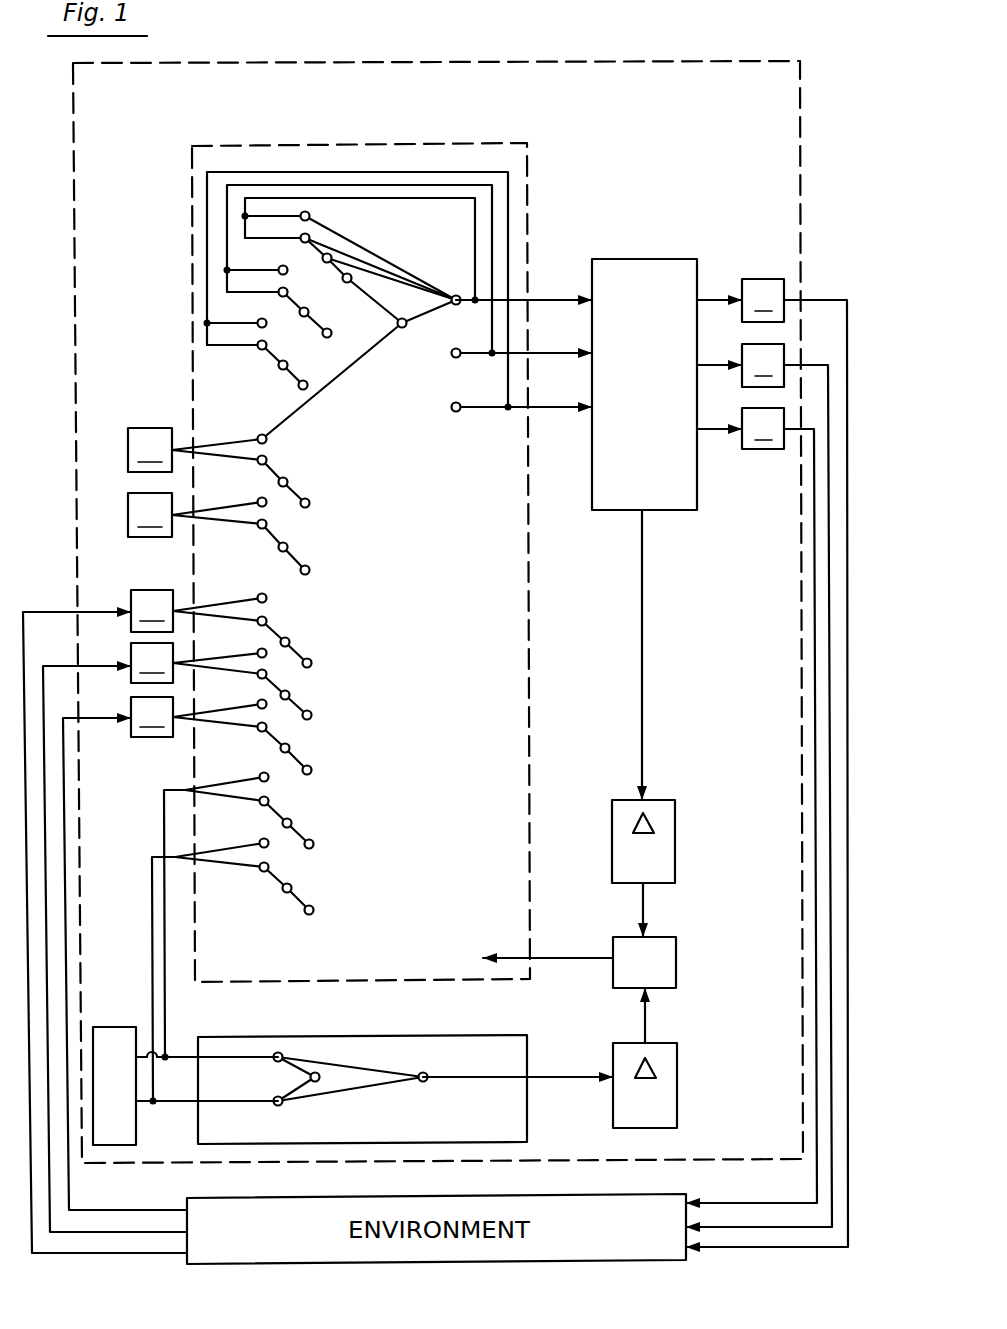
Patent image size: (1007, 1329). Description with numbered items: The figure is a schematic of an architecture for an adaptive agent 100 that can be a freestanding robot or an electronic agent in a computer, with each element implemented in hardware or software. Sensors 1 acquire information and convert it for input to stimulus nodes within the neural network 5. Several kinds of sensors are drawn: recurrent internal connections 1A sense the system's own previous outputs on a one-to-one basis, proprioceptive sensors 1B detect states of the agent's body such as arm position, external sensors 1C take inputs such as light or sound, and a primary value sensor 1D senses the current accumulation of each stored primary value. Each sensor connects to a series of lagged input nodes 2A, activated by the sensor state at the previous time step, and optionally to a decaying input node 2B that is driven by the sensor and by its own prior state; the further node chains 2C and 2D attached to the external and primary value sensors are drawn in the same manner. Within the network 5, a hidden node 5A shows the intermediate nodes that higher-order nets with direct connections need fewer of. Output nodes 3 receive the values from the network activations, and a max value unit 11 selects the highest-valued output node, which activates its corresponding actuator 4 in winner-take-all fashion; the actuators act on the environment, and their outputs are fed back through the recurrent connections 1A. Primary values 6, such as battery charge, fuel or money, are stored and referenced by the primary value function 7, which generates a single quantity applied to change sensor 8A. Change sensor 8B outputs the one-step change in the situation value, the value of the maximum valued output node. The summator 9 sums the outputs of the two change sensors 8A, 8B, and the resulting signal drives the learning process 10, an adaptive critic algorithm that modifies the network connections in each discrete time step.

The adaptive agent 100 is at (608, 61).
The sensors 1 is at (163, 190).
The recurrent internal connections 1A is at (292, 166).
The proprioceptive sensors 1B is at (195, 482).
The external sensors 1C is at (196, 663).
The primary value sensor 1D is at (155, 850).
The lagged input nodes 2A is at (300, 543).
The decaying input node 2B is at (266, 449).
The node chain C 2C is at (297, 640).
The node chain D 2D is at (302, 820).
The output nodes 3 is at (458, 420).
The actuator 4 is at (767, 763).
The neural network 5 is at (310, 983).
The hidden node 5A is at (404, 330).
The primary values 6 is at (103, 1096).
The primary value function 7 is at (471, 1035).
The change sensor for primary value function 8A is at (630, 1118).
The change sensor for situation value 8B is at (660, 875).
The summator 9 is at (667, 935).
The learning process 10 is at (496, 955).
The max value unit 11 is at (631, 482).